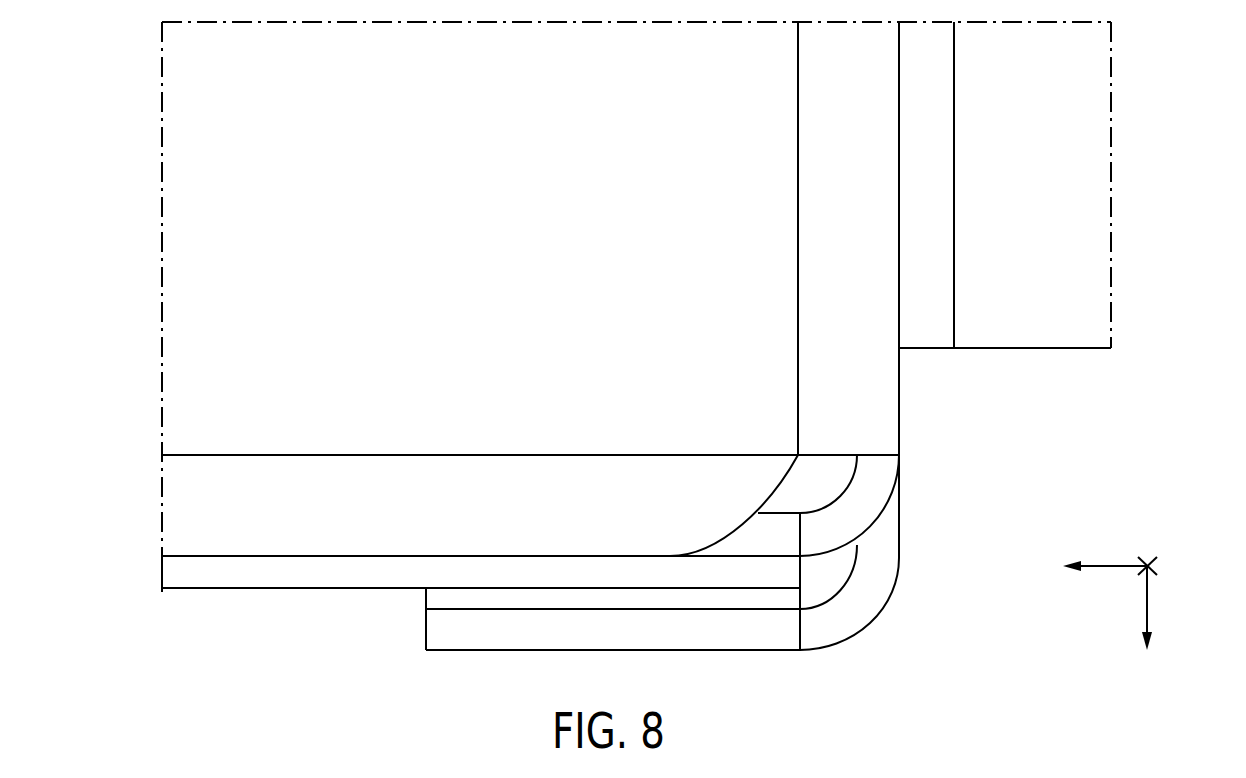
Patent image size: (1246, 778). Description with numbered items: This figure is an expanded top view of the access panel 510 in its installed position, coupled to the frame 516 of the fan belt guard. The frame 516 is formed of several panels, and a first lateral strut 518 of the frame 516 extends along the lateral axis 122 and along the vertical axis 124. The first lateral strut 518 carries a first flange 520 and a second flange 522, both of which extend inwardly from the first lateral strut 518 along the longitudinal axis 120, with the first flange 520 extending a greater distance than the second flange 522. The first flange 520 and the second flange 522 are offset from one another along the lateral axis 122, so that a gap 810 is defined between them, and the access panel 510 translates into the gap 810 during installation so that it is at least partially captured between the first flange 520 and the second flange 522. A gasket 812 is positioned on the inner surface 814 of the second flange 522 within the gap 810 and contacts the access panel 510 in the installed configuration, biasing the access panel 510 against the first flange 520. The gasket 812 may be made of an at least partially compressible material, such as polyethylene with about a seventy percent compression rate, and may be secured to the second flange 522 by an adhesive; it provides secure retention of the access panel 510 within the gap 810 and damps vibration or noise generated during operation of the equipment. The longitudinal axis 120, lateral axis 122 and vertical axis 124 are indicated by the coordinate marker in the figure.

The frame 516 is at (128, 373).
The first lateral strut 518 is at (883, 385).
The first flange 520 is at (870, 482).
The second flange 522 is at (182, 502).
The access panel 510 is at (267, 573).
The gap 810 is at (820, 580).
The gasket 812 is at (433, 598).
The inner surface 814 is at (470, 607).
The longitudinal axis 120 is at (1148, 571).
The lateral axis 122 is at (1150, 602).
The vertical axis 124 is at (1150, 558).